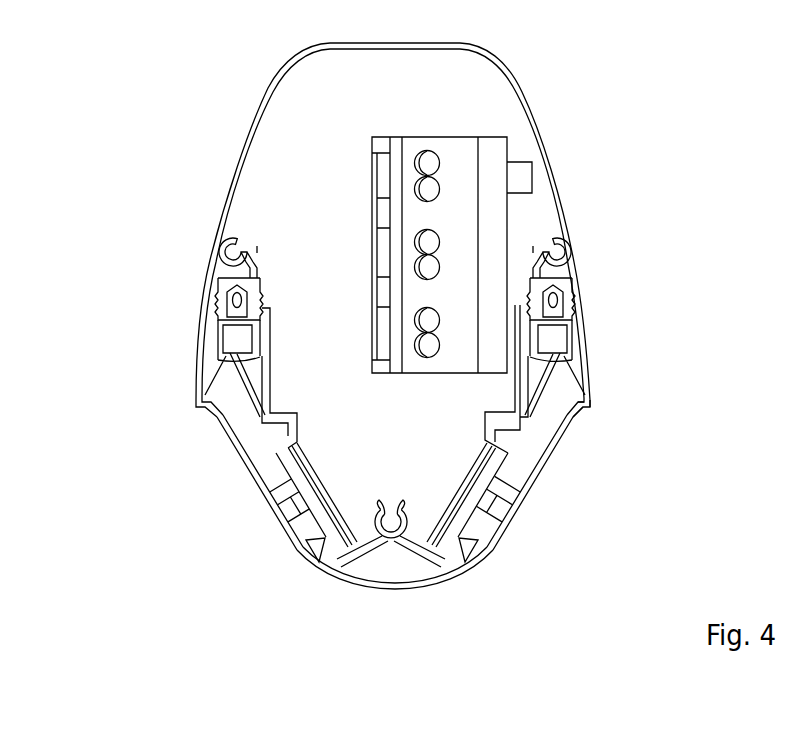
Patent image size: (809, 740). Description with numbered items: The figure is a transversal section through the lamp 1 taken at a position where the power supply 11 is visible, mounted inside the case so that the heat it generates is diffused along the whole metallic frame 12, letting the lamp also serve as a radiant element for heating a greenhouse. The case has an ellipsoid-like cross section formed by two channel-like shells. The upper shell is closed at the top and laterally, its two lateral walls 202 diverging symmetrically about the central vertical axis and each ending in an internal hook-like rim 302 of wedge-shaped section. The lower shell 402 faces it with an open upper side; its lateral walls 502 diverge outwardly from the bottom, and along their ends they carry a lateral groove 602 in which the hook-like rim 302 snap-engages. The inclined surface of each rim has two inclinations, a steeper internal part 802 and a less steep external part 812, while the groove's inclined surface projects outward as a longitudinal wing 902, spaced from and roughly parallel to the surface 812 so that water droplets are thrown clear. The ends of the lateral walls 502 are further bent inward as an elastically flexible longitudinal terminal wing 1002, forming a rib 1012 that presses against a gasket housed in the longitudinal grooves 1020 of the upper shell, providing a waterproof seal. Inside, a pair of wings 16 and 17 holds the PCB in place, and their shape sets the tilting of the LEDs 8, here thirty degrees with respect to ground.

The lamp 1 is at (255, 117).
The power supply 11 is at (460, 255).
The metallic frame 12 is at (217, 267).
The lateral walls 202 is at (212, 260).
The longitudinal grooves 1020 is at (252, 295).
The rib 1012 is at (225, 353).
The longitudinal terminal wing 1002 is at (218, 365).
The lateral groove 602 is at (207, 405).
The hook-like rim 302 is at (578, 398).
The less steep inclined surface 812 is at (580, 412).
The longitudinal wing 902 is at (580, 417).
The steeper inclined surface 802 is at (580, 400).
The lateral walls 502 is at (238, 463).
The lower shell 402 is at (345, 582).
The wing 17 is at (515, 457).
The LEDs 8 is at (300, 513).
The wing 16 is at (445, 570).